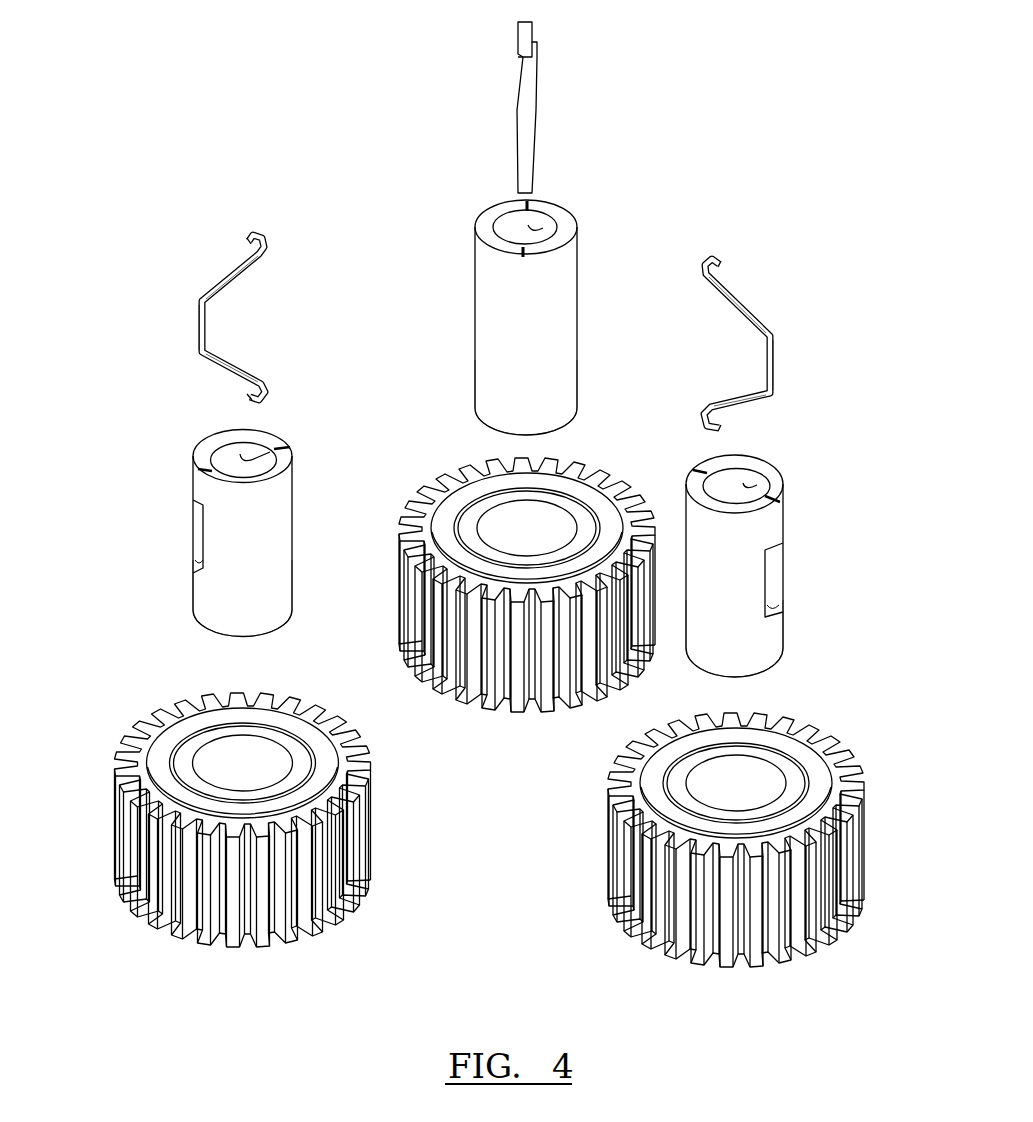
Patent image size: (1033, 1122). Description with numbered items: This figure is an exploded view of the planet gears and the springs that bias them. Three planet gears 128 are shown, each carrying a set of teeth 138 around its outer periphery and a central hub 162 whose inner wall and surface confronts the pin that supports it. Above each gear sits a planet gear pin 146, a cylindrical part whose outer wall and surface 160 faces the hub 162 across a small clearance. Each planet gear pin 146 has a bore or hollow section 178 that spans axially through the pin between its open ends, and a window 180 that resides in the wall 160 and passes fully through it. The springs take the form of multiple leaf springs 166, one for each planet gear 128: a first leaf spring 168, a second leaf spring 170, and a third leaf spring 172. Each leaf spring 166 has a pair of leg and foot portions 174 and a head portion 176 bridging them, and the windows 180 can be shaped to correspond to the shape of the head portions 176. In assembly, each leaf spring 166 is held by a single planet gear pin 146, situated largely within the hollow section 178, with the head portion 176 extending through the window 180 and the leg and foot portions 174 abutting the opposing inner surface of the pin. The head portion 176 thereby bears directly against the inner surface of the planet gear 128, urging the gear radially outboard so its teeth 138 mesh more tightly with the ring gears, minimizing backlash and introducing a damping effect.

The planet gear 128 is at (170, 735).
The set of teeth 138 is at (227, 910).
The planet gear pin 146 is at (207, 500).
The outer wall and surface 160 is at (207, 627).
The hub 162 is at (297, 750).
The leaf spring 166 is at (481, 226).
The first leaf spring 168 is at (538, 92).
The second leaf spring 170 is at (778, 355).
The third leaf spring 172 is at (193, 333).
The leg and foot portions 174 is at (250, 282).
The head portion 176 is at (192, 345).
The bore or hollow section 178 is at (256, 458).
The window 180 is at (197, 568).